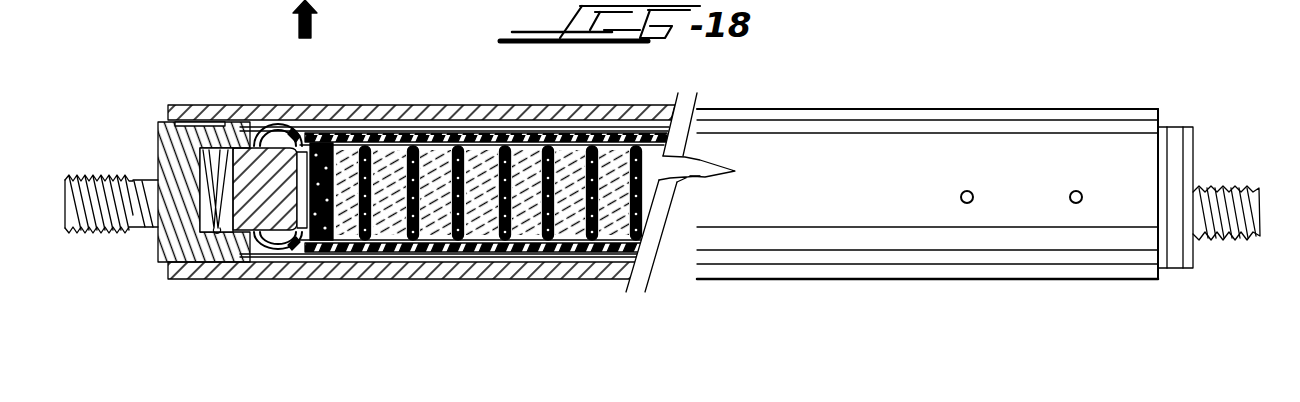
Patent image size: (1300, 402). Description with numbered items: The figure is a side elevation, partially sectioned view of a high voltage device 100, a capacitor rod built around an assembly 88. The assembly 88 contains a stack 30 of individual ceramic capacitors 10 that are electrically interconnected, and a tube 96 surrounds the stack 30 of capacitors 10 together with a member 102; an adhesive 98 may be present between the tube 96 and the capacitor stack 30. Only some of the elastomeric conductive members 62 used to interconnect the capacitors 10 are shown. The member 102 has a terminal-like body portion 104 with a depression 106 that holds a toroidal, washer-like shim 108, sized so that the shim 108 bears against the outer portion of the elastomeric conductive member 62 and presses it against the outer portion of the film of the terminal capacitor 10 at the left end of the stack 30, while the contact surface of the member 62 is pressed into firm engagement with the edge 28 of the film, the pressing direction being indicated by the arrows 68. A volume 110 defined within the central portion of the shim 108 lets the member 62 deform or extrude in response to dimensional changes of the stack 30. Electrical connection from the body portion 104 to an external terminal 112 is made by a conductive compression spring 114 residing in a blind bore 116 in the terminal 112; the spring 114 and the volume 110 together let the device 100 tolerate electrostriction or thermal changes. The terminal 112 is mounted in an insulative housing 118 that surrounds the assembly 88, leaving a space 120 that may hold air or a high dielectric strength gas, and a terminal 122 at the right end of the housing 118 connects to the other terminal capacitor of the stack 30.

The ceramic capacitor 10 is at (568, 210).
The edge of the film 28 is at (316, 237).
The stack of capacitors 30 is at (471, 196).
The elastomeric conductive member 62 is at (330, 222).
The arrows 68 is at (317, 22).
The assembly 88 is at (458, 107).
The tube 96 is at (493, 137).
The adhesive 98 is at (620, 140).
The high voltage device 100 is at (700, 92).
The member 102 is at (252, 242).
The body portion 104 is at (276, 130).
The depression 106 is at (294, 189).
The shim 108 is at (308, 137).
The volume 110 is at (363, 107).
The external terminal 112 is at (113, 215).
The conductive compression spring 114 is at (221, 128).
The blind bore 116 is at (172, 262).
The insulative housing 118 is at (392, 108).
The space 120 is at (480, 262).
The terminal 122 is at (1238, 188).